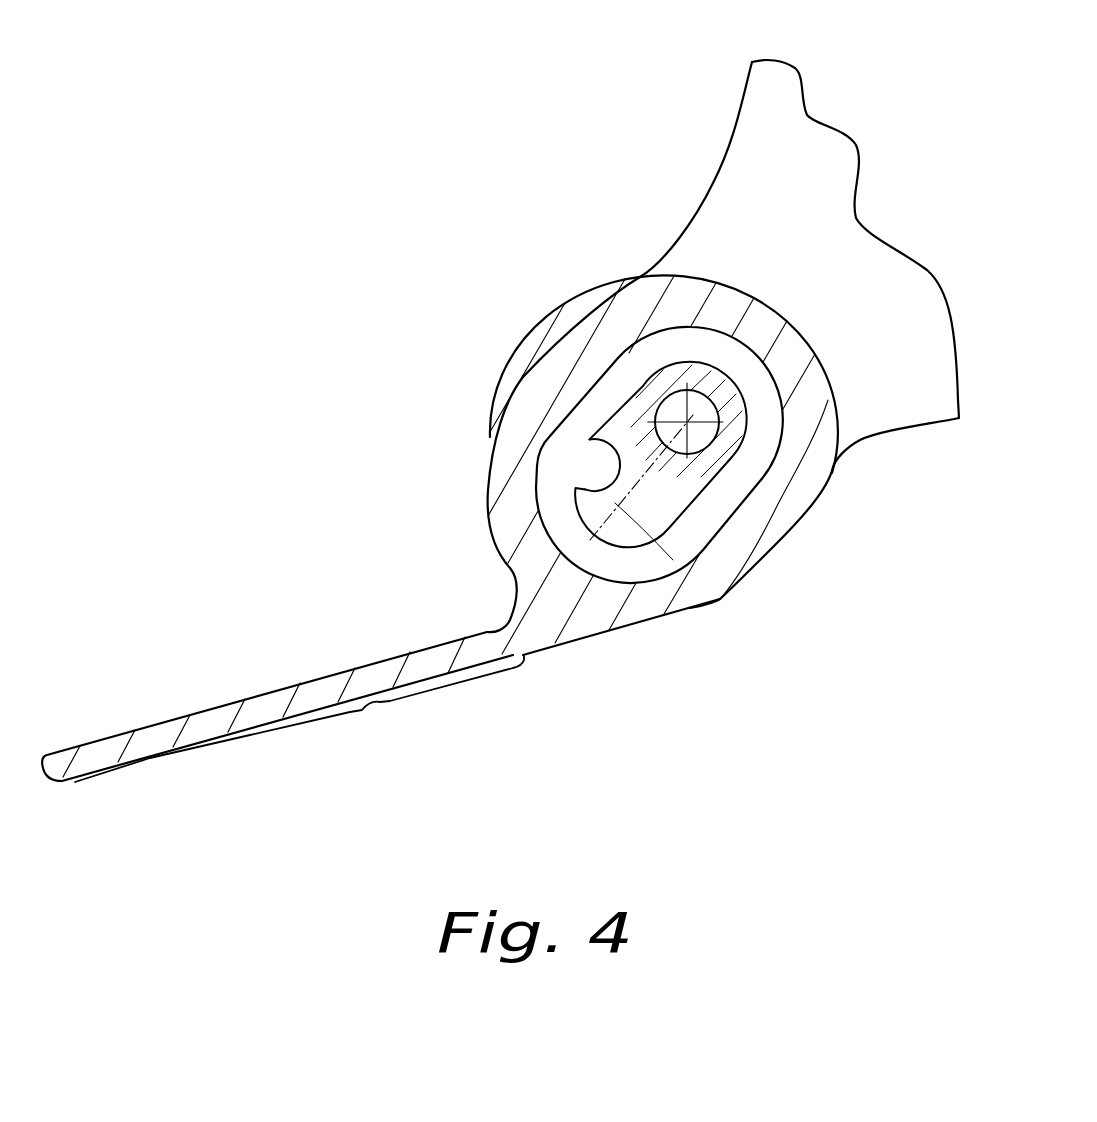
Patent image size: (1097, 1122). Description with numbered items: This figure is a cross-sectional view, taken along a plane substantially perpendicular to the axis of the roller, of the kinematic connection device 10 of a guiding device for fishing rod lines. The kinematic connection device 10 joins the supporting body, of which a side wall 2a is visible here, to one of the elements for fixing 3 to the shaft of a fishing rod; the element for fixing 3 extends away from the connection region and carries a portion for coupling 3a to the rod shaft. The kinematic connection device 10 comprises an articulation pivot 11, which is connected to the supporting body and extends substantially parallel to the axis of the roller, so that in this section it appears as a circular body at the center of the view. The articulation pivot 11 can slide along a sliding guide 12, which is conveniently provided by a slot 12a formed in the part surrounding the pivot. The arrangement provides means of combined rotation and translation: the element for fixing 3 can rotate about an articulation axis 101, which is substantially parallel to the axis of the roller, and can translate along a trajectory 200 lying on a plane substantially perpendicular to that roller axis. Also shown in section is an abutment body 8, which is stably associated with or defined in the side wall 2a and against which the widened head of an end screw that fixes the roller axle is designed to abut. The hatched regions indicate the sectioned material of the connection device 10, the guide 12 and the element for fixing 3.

The side wall 2a is at (778, 155).
The kinematic connection device 10 is at (495, 338).
The trajectory 200 is at (700, 614).
The sliding guide 12 is at (592, 372).
The slot 12a is at (575, 497).
The abutment body 8 is at (660, 408).
The articulation pivot 11 is at (720, 397).
The articulation axis 101 is at (693, 415).
The element for fixing 3 is at (273, 670).
The portion for coupling 3a is at (325, 708).